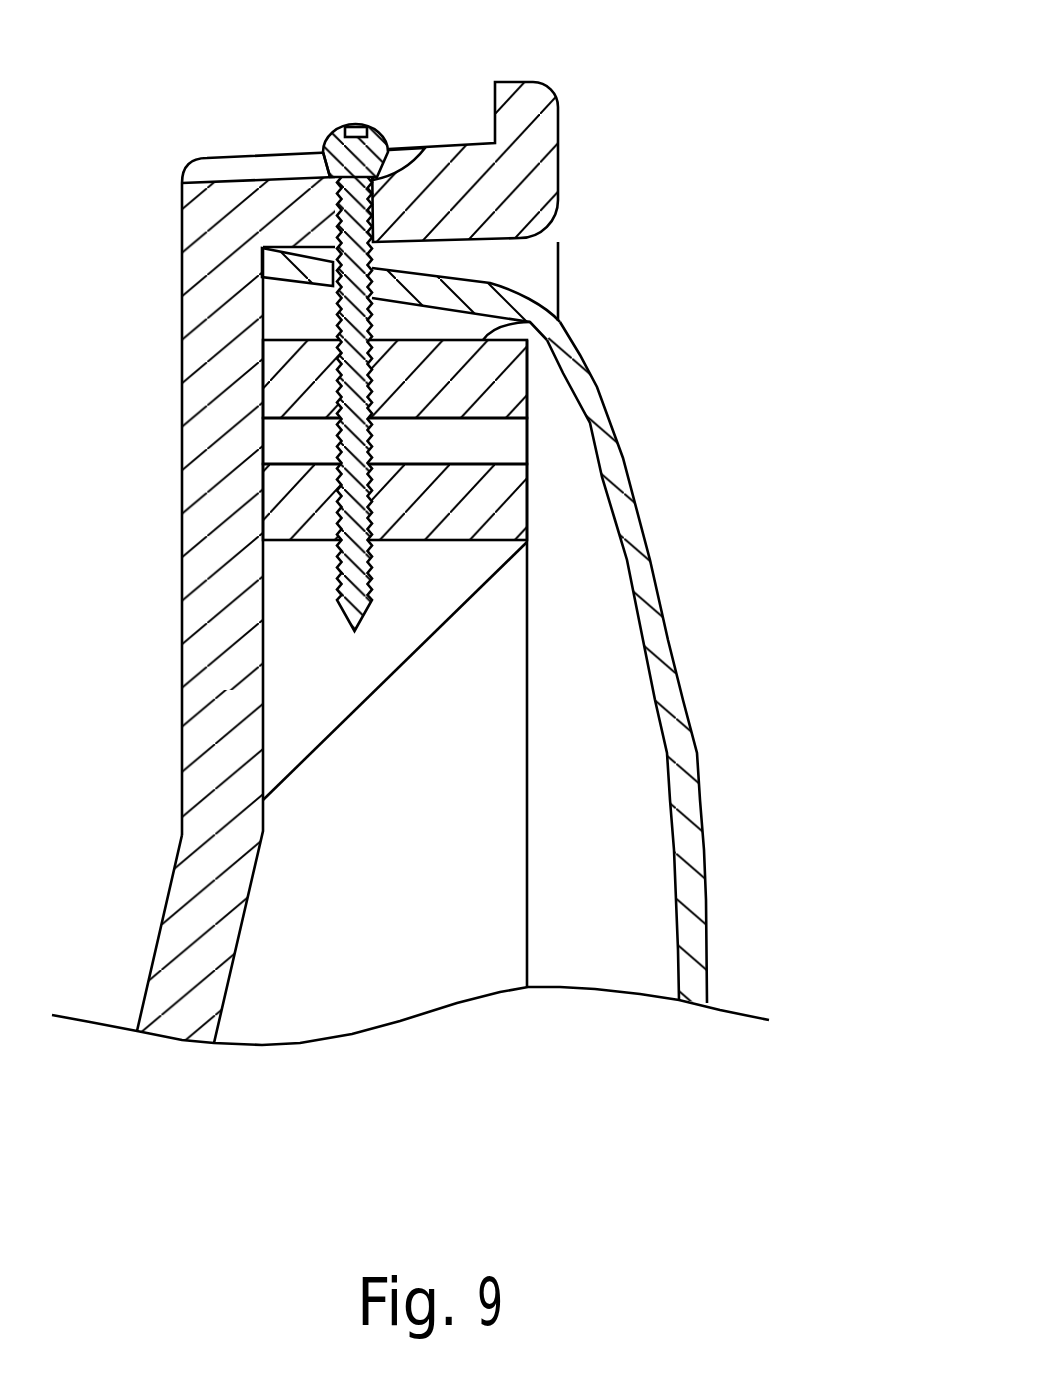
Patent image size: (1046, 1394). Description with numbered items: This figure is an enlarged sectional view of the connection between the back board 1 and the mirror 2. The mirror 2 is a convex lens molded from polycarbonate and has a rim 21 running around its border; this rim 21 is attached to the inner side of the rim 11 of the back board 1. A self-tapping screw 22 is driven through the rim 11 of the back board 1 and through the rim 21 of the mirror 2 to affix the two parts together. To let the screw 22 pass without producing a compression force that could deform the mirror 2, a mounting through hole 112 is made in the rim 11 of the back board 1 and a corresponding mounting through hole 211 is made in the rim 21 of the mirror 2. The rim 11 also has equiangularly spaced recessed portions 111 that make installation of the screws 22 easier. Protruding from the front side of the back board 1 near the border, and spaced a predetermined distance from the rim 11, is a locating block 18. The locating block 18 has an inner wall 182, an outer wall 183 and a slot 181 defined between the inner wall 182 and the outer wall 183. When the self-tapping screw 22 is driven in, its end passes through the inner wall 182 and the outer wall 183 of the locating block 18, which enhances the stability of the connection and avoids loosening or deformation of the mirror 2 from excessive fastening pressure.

The back board 1 is at (182, 642).
The rim 11 is at (413, 126).
The recessed portions 111 is at (332, 205).
The mounting through hole 112 is at (337, 210).
The mirror 2 is at (516, 536).
The rim 21 is at (490, 283).
The mounting through hole 211 is at (335, 262).
The self-tapping screw 22 is at (369, 325).
The locating block 18 is at (525, 642).
The slot 181 is at (498, 443).
The inner wall 182 is at (505, 524).
The outer wall 183 is at (510, 394).